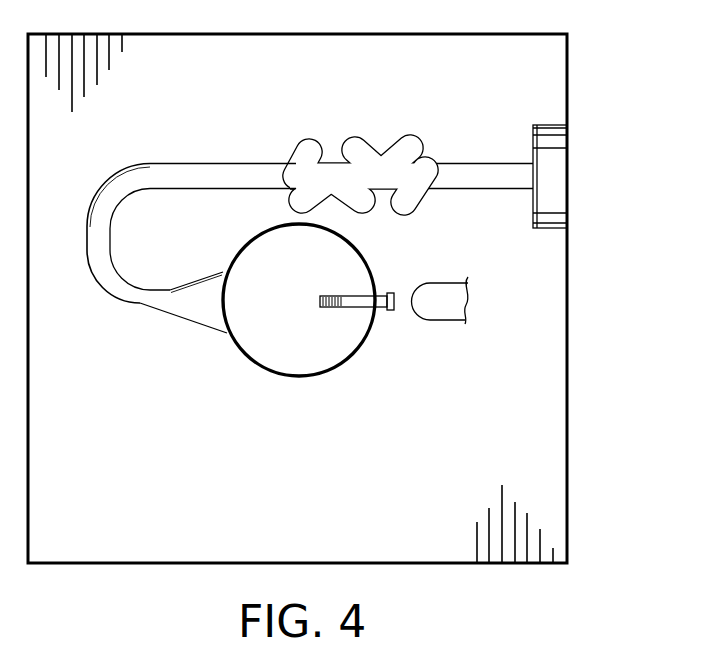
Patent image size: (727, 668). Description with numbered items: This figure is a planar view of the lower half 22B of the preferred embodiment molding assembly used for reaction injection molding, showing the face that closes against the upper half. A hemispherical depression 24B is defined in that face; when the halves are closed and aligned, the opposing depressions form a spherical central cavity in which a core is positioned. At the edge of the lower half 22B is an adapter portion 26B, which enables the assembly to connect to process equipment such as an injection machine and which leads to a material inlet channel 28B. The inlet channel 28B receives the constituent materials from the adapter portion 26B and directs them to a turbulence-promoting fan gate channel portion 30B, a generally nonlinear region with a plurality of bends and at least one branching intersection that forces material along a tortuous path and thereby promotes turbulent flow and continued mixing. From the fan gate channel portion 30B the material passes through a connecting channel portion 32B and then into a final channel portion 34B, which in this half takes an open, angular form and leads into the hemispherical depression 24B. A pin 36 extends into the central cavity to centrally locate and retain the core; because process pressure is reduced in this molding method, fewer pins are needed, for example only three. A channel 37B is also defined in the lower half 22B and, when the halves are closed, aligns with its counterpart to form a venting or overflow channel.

The lower half 22B is at (568, 73).
The hemispherical depression 24B is at (253, 362).
The adapter portion 26B is at (550, 185).
The material inlet channel 28B is at (482, 178).
The turbulence-promoting fan gate channel portion 30B is at (412, 152).
The connecting channel portion 32B is at (207, 177).
The final channel portion 34B is at (207, 275).
The pin 36 is at (353, 308).
The channel 37B is at (443, 320).